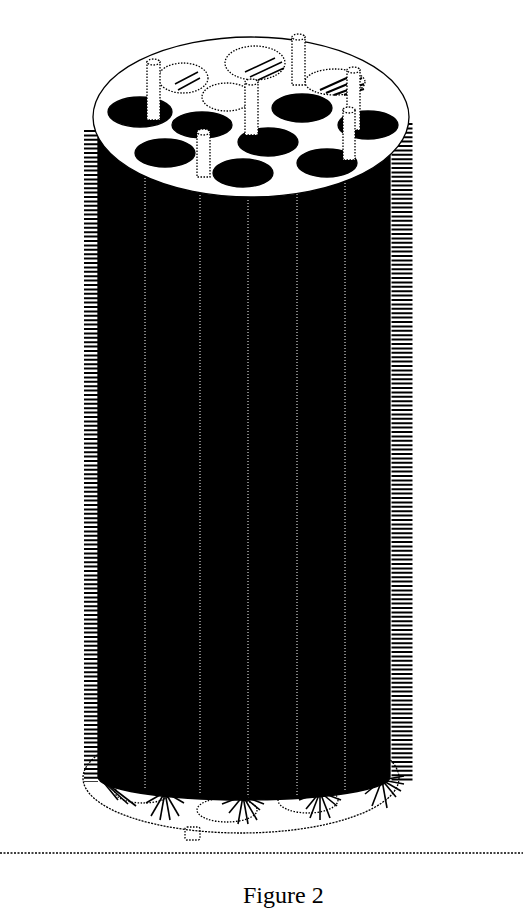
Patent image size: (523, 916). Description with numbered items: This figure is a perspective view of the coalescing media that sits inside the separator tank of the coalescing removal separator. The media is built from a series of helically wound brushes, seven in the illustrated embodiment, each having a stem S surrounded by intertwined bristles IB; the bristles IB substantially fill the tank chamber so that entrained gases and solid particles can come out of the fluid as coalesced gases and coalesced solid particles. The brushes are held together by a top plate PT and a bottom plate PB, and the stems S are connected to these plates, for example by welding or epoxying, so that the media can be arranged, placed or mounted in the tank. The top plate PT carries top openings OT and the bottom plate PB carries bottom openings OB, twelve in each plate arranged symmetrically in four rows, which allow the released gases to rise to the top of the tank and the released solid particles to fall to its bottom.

The stem S is at (302, 43).
The top plate PT is at (373, 82).
The top openings OT is at (462, 92).
The intertwined bristles IB is at (413, 213).
The bottom plate PB is at (350, 800).
The bottom openings OB is at (323, 810).